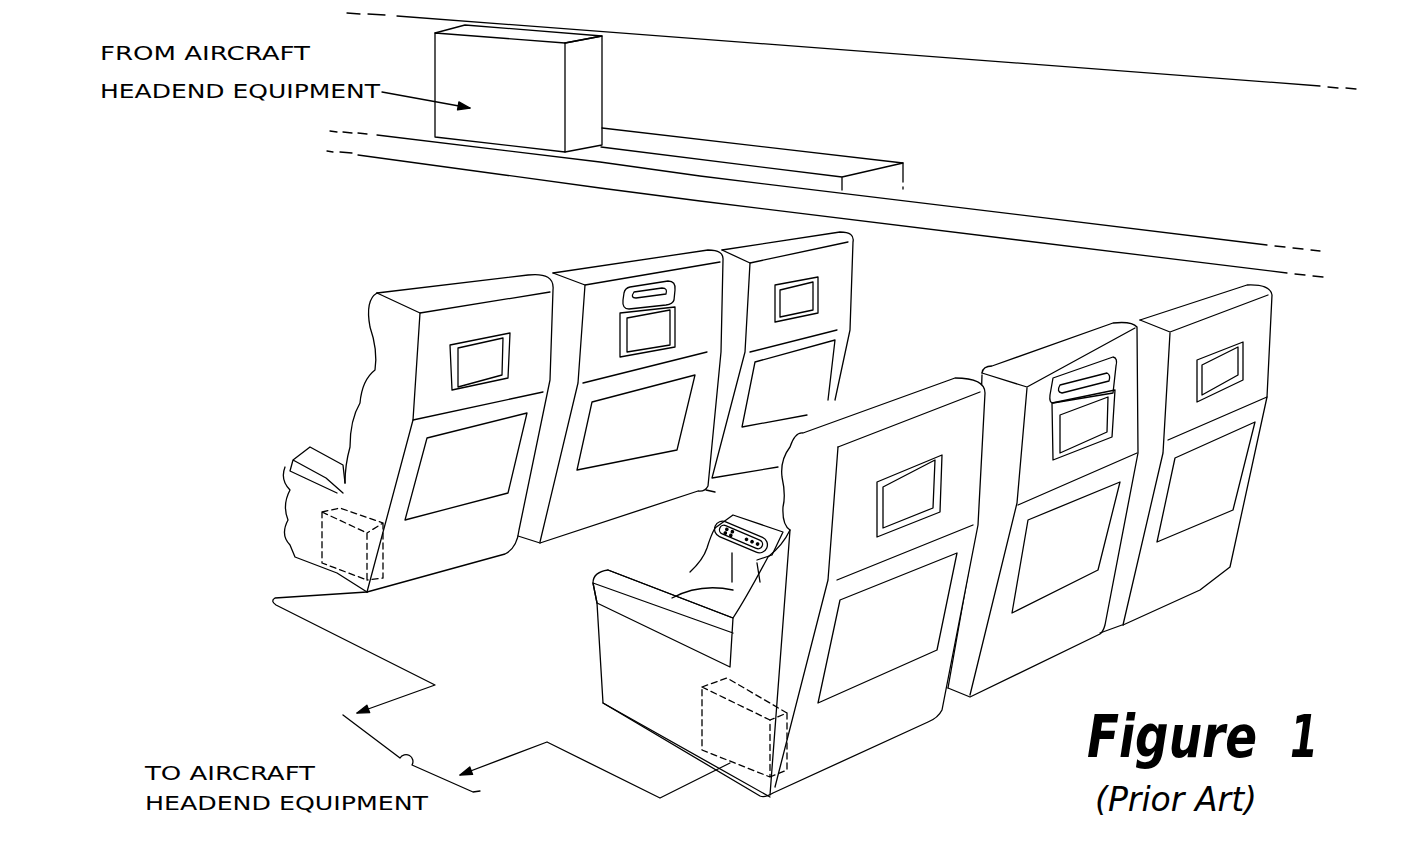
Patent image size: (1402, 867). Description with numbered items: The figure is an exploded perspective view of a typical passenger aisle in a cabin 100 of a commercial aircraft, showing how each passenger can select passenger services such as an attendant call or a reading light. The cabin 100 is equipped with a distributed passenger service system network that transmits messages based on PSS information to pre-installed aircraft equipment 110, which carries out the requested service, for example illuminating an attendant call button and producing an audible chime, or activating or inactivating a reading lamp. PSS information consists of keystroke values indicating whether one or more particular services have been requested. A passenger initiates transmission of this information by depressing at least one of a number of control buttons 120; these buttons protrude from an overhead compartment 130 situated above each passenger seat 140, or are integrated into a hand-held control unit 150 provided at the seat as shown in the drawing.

The cabin 100 is at (311, 253).
The pre-installed aircraft equipment 110 is at (585, 89).
The control buttons 120 is at (743, 532).
The overhead compartment 130 is at (593, 165).
The passenger seat 140 is at (695, 545).
The hand-held control unit 150 is at (690, 572).